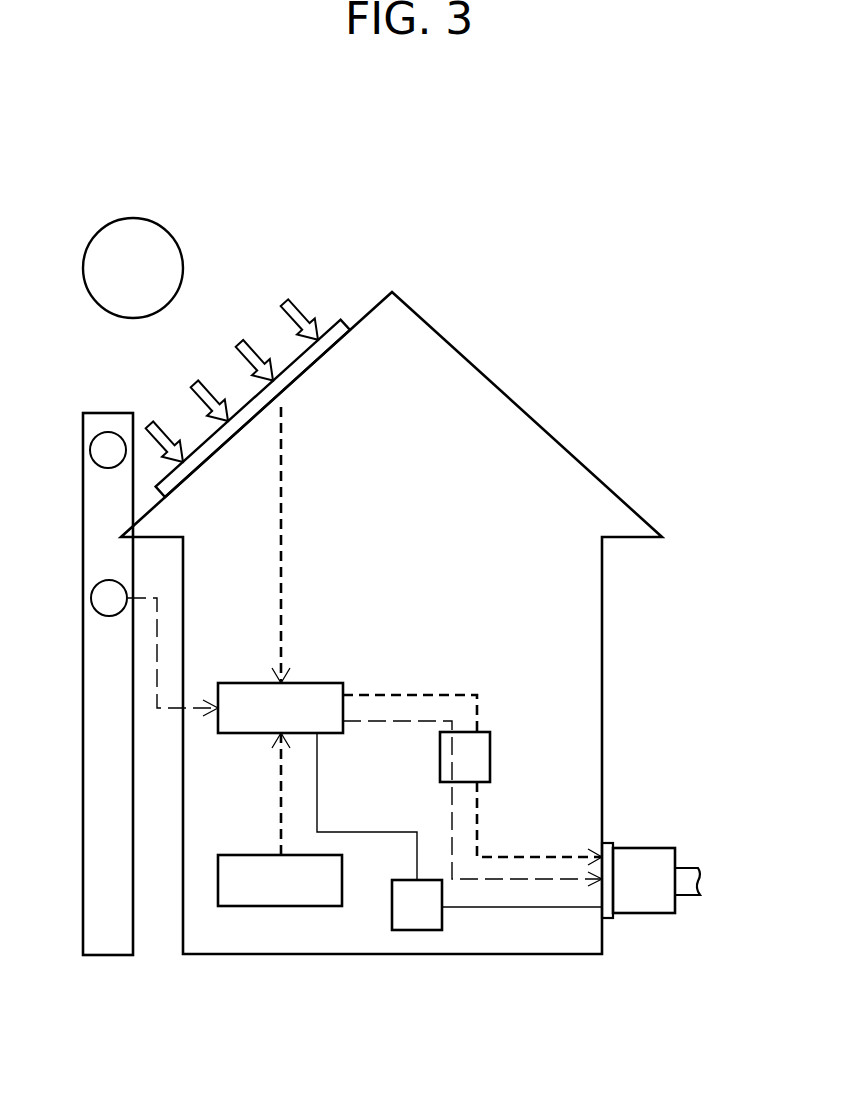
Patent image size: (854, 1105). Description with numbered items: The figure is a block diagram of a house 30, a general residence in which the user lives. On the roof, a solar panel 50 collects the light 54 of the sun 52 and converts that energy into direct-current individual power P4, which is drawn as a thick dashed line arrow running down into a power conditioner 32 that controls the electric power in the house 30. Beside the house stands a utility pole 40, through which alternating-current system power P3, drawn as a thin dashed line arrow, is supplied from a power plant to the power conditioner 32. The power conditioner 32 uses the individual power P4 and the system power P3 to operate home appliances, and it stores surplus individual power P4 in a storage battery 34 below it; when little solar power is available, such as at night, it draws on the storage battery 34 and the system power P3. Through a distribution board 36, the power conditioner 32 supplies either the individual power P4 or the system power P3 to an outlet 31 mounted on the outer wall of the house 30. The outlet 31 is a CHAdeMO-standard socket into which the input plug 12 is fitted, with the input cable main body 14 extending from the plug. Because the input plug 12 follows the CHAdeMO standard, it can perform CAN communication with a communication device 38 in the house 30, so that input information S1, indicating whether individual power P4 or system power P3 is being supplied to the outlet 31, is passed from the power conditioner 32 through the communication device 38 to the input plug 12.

The house 30 is at (458, 297).
The solar panel 50 is at (337, 323).
The light 54 is at (149, 424).
The sun 52 is at (131, 218).
The utility pole 40 is at (107, 412).
The power conditioner 32 is at (256, 734).
The storage battery 34 is at (283, 908).
The distribution board 36 is at (478, 758).
The communication device 38 is at (415, 916).
The outlet 31 is at (606, 843).
The input plug 12 is at (643, 898).
The input cable main body 14 is at (686, 880).
The system power P3 is at (158, 656).
The individual power P4 is at (283, 537).
The input information S1 is at (370, 834).